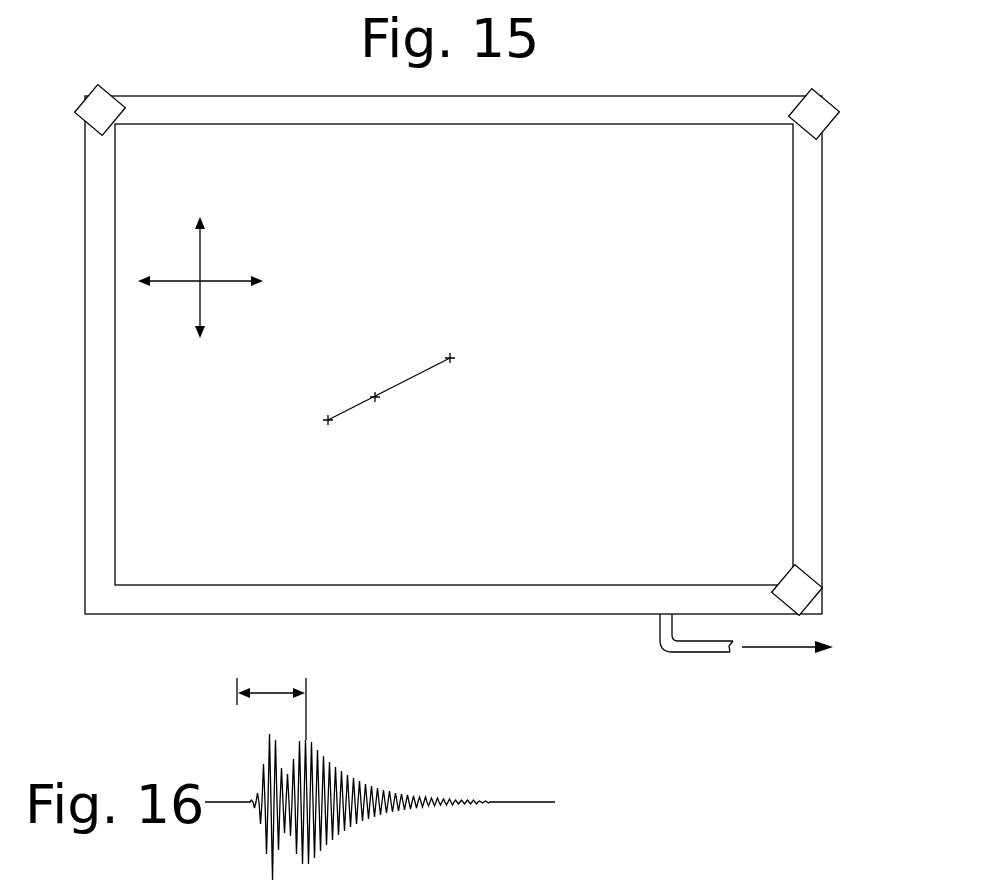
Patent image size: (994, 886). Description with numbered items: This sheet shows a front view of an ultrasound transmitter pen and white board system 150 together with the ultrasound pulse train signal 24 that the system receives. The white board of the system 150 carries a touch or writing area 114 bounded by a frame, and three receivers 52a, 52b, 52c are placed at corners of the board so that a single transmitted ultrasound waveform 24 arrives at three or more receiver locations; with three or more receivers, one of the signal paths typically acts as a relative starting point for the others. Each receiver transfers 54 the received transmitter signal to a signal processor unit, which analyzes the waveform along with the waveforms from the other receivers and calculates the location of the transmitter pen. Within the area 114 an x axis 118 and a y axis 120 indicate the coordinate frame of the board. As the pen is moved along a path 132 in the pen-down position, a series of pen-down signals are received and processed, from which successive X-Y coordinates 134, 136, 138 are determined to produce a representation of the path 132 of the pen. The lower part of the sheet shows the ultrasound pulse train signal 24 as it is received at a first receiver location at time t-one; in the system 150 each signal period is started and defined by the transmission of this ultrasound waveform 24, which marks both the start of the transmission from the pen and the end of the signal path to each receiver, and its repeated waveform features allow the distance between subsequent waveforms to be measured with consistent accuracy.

In FIG. 15, the ultrasound transmitter pen and white board system 150 is at (318, 78).
In FIG. 15, the touch sensitive area 114 is at (552, 124).
In FIG. 15, the receiver 52a is at (99, 86).
In FIG. 15, the receiver 52b is at (820, 90).
In FIG. 15, the receiver 52c is at (824, 599).
In FIG. 15, the x axis 118 is at (237, 267).
In FIG. 15, the y axis 120 is at (177, 314).
In FIG. 15, the path 132 is at (403, 348).
In FIG. 15, the first touch point 134 is at (327, 417).
In FIG. 15, the X-Y coordinate 136 is at (373, 395).
In FIG. 15, the X-Y coordinate 138 is at (453, 355).
In FIG. 15, the transfer 54 is at (710, 656).
In FIG. 16, the transmission signal 24 is at (351, 752).